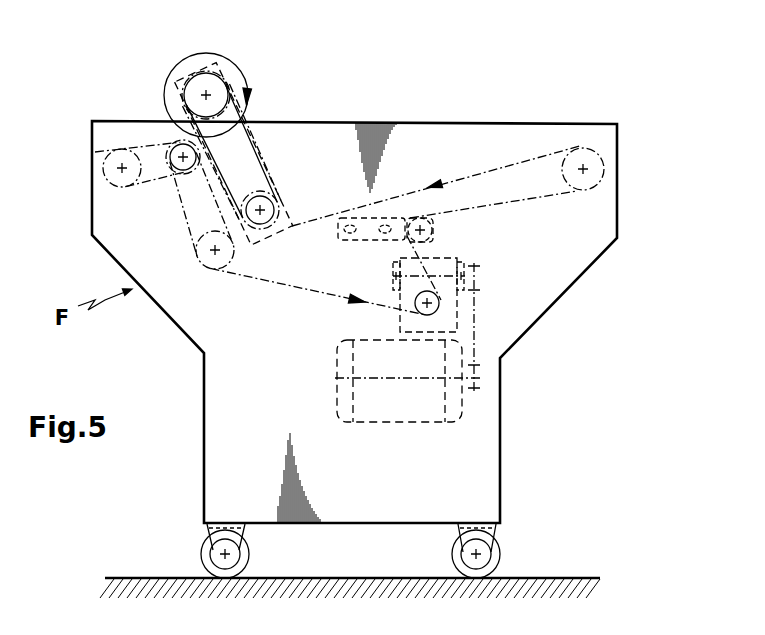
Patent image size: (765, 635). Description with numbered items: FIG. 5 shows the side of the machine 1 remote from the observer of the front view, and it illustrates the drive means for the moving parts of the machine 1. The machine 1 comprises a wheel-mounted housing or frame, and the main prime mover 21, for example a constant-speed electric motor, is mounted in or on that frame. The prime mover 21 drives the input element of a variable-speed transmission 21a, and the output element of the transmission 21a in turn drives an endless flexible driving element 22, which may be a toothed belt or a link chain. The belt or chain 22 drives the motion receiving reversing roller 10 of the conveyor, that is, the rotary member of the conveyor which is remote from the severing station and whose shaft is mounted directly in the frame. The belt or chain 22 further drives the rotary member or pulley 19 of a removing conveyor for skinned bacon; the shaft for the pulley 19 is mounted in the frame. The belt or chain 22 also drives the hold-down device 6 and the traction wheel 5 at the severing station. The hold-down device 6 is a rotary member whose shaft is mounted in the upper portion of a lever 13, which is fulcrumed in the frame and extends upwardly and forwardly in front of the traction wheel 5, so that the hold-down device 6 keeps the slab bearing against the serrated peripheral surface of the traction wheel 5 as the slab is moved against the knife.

The machine 1 is at (483, 72).
The traction wheel 5 is at (178, 170).
The hold-down device 6 is at (200, 58).
The reversing roller 10 is at (600, 158).
The lever 13 is at (267, 175).
The pulley 19 is at (105, 188).
The main prime mover 21 is at (414, 434).
The variable-speed transmission 21a is at (458, 308).
The endless flexible driving element 22 is at (513, 203).